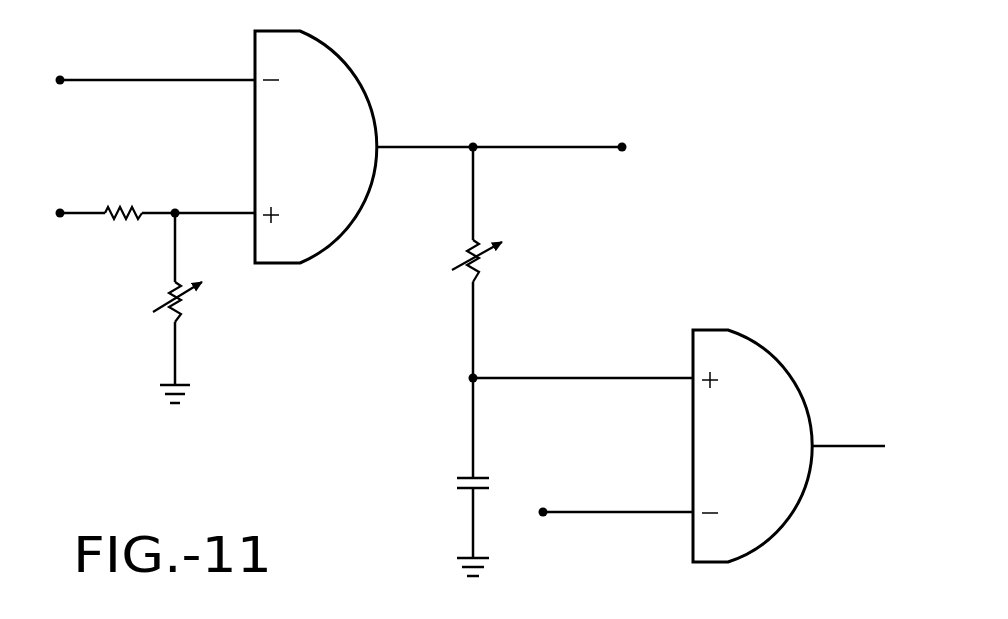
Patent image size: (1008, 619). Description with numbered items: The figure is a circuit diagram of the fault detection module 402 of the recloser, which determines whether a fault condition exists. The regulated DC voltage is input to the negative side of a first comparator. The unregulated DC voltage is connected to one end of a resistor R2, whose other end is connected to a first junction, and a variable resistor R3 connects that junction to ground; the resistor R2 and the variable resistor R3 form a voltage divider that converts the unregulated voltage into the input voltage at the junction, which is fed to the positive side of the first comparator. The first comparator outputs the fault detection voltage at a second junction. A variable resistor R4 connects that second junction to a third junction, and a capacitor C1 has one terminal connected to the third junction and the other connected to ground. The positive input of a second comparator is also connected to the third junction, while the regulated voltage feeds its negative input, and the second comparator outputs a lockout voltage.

The fault detection module 402 is at (470, 303).
The resistor R2 is at (123, 195).
The variable resistor R3 is at (163, 302).
The variable resistor R4 is at (462, 261).
The capacitor C1 is at (478, 500).